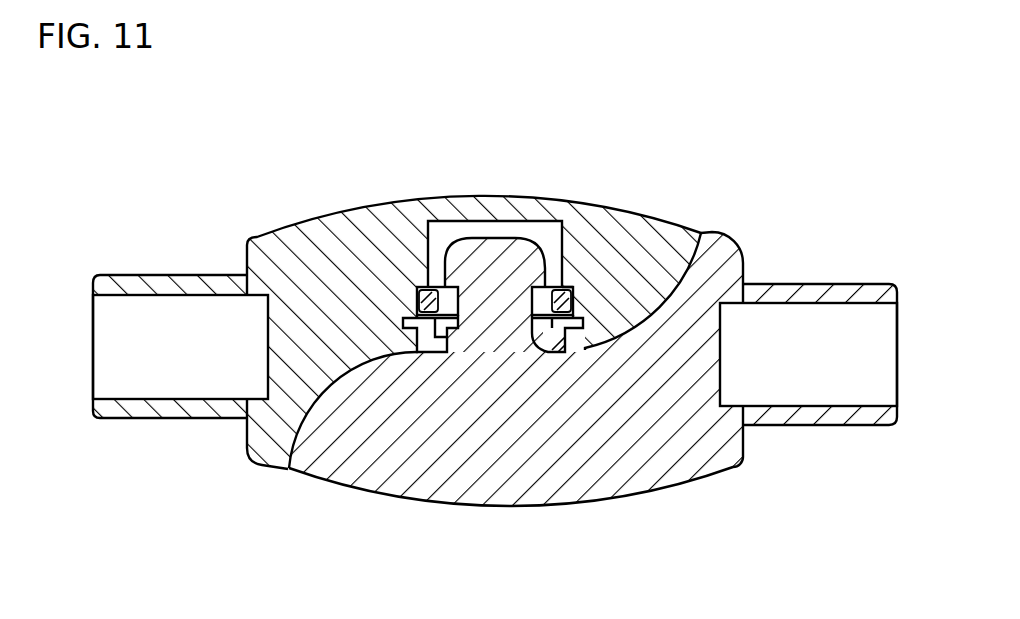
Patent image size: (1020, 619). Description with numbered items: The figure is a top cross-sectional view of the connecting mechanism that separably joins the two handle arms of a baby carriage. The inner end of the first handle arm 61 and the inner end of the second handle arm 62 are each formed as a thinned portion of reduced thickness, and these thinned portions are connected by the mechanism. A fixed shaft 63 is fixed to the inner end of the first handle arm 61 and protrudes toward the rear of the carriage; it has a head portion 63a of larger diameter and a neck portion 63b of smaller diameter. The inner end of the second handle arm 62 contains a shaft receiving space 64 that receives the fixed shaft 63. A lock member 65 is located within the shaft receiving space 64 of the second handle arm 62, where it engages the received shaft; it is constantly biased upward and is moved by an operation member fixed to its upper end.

The first handle arm 61 is at (845, 302).
The second handle arm 62 is at (158, 284).
The fixed shaft 63 is at (534, 226).
The head portion 63a is at (480, 253).
The neck portion 63b is at (557, 340).
The shaft receiving space 64 is at (547, 242).
The lock member 65 is at (408, 292).